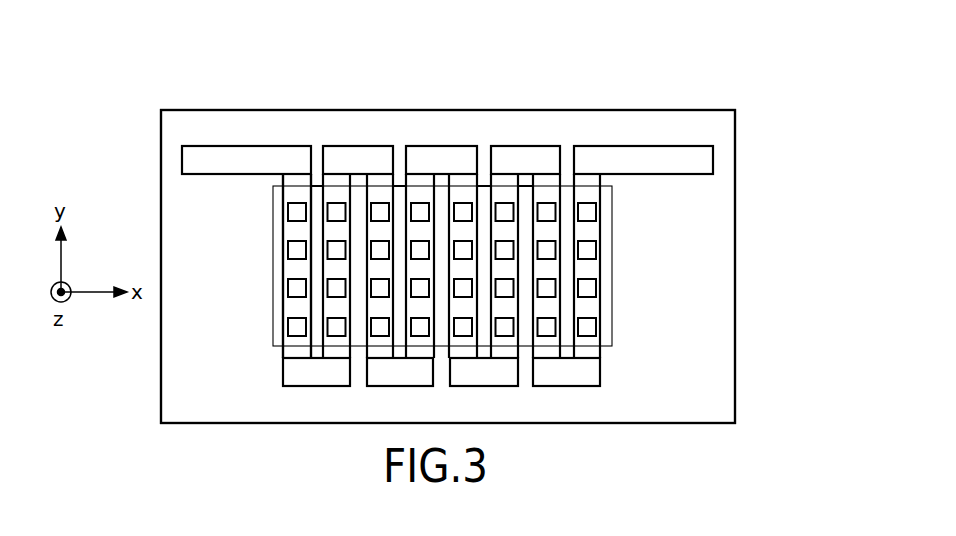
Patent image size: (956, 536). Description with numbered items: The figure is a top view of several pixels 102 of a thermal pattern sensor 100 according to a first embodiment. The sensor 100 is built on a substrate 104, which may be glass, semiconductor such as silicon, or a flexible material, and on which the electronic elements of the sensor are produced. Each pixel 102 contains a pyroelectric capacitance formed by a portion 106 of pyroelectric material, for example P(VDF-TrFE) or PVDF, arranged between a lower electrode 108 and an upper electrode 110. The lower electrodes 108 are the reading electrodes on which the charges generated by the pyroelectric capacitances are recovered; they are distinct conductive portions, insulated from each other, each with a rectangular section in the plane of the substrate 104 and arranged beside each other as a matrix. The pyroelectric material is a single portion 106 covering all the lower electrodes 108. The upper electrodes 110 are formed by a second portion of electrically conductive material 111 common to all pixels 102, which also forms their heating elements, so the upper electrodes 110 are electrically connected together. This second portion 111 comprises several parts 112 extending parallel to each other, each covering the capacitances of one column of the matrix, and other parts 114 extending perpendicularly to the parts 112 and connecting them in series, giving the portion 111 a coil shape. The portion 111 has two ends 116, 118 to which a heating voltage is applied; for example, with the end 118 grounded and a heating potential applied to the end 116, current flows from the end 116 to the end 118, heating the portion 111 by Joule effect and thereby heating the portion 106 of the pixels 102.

The thermal pattern sensor 100 is at (768, 108).
The pixel 102 is at (262, 330).
The substrate 104 is at (725, 392).
The portion of pyroelectric material 106 is at (606, 211).
The lower electrode 108 is at (597, 249).
The upper electrode 110 is at (272, 207).
The second portion of electrically conductive material 111 is at (346, 154).
The part of the second portion of electrically conductive material 112 is at (594, 355).
The other part of the second portion of electrically conductive material 114 is at (514, 154).
The end 116 is at (195, 162).
The end 118 is at (700, 160).